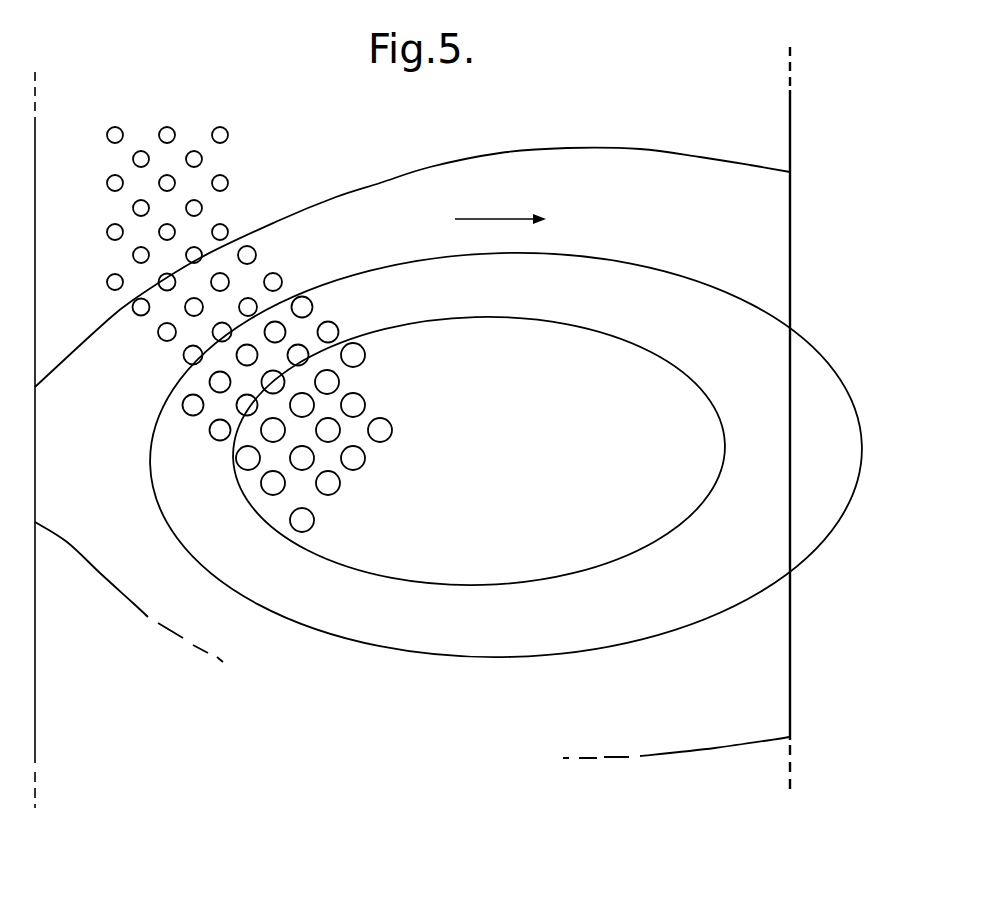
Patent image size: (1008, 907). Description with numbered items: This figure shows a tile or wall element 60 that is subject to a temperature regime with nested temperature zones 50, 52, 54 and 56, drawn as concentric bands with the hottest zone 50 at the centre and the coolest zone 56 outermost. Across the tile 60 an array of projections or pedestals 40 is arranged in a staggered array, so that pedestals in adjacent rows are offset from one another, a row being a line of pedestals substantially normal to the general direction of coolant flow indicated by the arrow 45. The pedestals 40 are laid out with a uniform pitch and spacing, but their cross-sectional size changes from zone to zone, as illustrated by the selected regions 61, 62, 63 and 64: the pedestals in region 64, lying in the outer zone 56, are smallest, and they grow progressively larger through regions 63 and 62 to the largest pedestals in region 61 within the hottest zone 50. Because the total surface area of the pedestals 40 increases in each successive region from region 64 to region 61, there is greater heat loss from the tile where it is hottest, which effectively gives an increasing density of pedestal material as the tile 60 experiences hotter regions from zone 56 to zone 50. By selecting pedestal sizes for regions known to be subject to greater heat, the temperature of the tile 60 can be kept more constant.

The pedestals 40 is at (189, 404).
The arrow 45 is at (495, 219).
The temperature zone 50 is at (479, 451).
The temperature zone 52 is at (506, 455).
The temperature zone 54 is at (725, 242).
The temperature zone 56 is at (412, 435).
The tile 60 is at (773, 113).
The selected region 61 is at (387, 379).
The selected region 62 is at (352, 307).
The selected region 63 is at (292, 257).
The selected region 64 is at (256, 163).